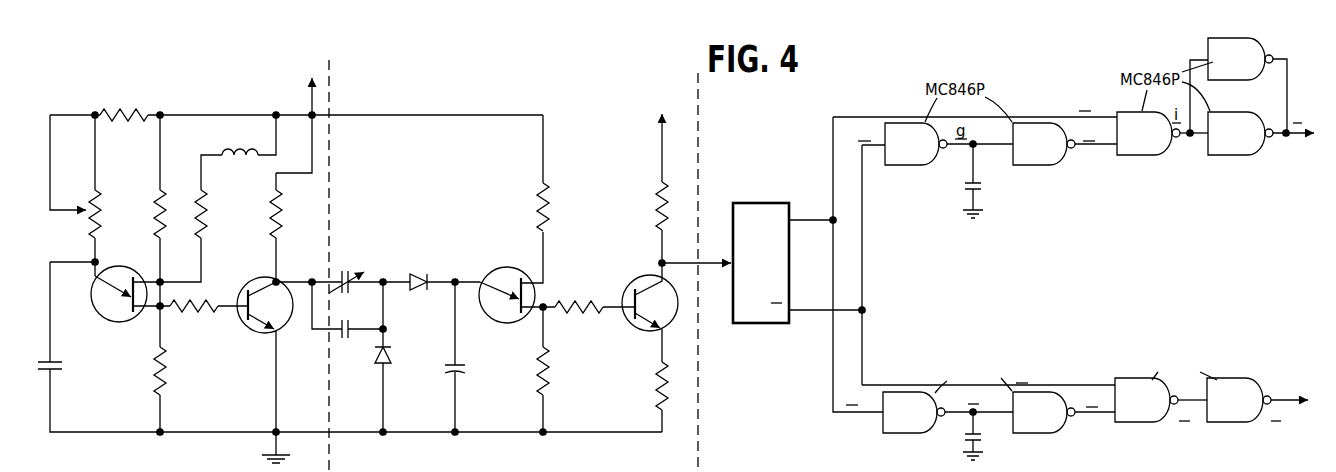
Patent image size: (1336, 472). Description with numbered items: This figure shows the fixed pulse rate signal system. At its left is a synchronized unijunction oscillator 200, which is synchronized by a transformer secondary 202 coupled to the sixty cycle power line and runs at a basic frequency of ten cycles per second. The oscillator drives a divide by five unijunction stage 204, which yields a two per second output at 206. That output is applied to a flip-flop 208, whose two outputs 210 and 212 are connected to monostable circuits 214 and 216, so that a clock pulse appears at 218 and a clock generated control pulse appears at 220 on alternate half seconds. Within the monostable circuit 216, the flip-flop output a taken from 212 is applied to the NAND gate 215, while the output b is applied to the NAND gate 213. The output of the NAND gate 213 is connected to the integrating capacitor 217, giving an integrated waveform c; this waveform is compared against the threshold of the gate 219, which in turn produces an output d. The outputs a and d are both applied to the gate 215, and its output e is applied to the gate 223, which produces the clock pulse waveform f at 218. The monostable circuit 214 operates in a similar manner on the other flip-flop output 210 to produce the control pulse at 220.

The synchronized unijunction oscillator 200 is at (249, 99).
The transformer secondary 202 is at (240, 160).
The divide by five unijunction stage 204 is at (529, 106).
The output of divide by five stage 206 is at (711, 272).
The flip-flop 208 is at (753, 324).
The flip-flop output 210 is at (816, 216).
The flip-flop output 212 is at (811, 306).
The NAND gate 213 is at (897, 392).
The monostable circuit 214 is at (1071, 165).
The NAND gate 215 is at (1123, 382).
The monostable circuit 216 is at (932, 379).
The integrating capacitor 217 is at (965, 437).
The clock pulse output 218 is at (1292, 395).
The gate 219 is at (1052, 428).
The clock generated control pulse output 220 is at (1297, 138).
The gate 223 is at (1250, 380).